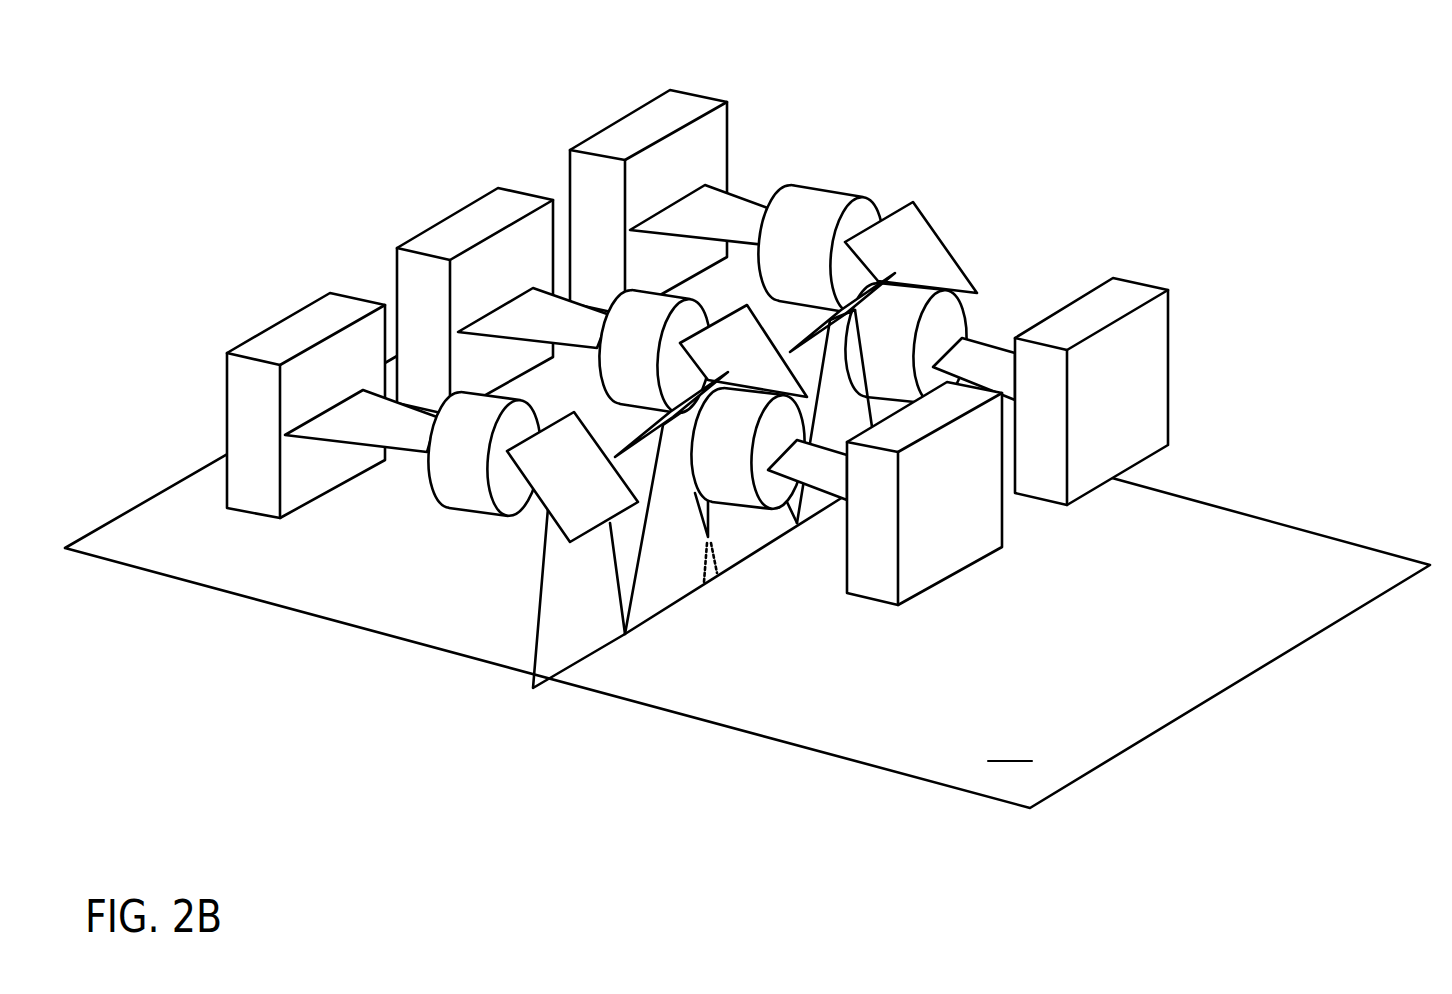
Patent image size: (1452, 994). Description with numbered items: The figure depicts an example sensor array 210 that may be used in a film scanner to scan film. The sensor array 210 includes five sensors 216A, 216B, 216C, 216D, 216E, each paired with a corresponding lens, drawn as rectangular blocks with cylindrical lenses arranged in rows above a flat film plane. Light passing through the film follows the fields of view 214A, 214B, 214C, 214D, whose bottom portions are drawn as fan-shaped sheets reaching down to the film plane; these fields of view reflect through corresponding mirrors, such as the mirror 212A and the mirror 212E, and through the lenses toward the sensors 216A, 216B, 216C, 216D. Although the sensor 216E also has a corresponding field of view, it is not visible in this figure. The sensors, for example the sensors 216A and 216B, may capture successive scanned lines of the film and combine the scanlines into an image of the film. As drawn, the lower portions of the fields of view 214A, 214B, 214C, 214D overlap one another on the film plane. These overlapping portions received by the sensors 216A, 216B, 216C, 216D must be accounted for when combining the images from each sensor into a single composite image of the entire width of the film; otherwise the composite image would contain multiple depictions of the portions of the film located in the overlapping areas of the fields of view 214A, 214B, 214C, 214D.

The sensor array 210 is at (613, 812).
The mirror 212A is at (530, 566).
The mirror 212E is at (925, 245).
The field of view 214A is at (547, 632).
The field of view 214B is at (658, 580).
The field of view 214C is at (750, 537).
The field of view 214D is at (817, 500).
The sensor 216A is at (302, 322).
The sensor 216B is at (632, 435).
The sensor 216C is at (453, 237).
The sensor 216D is at (813, 336).
The sensor 216E is at (613, 140).